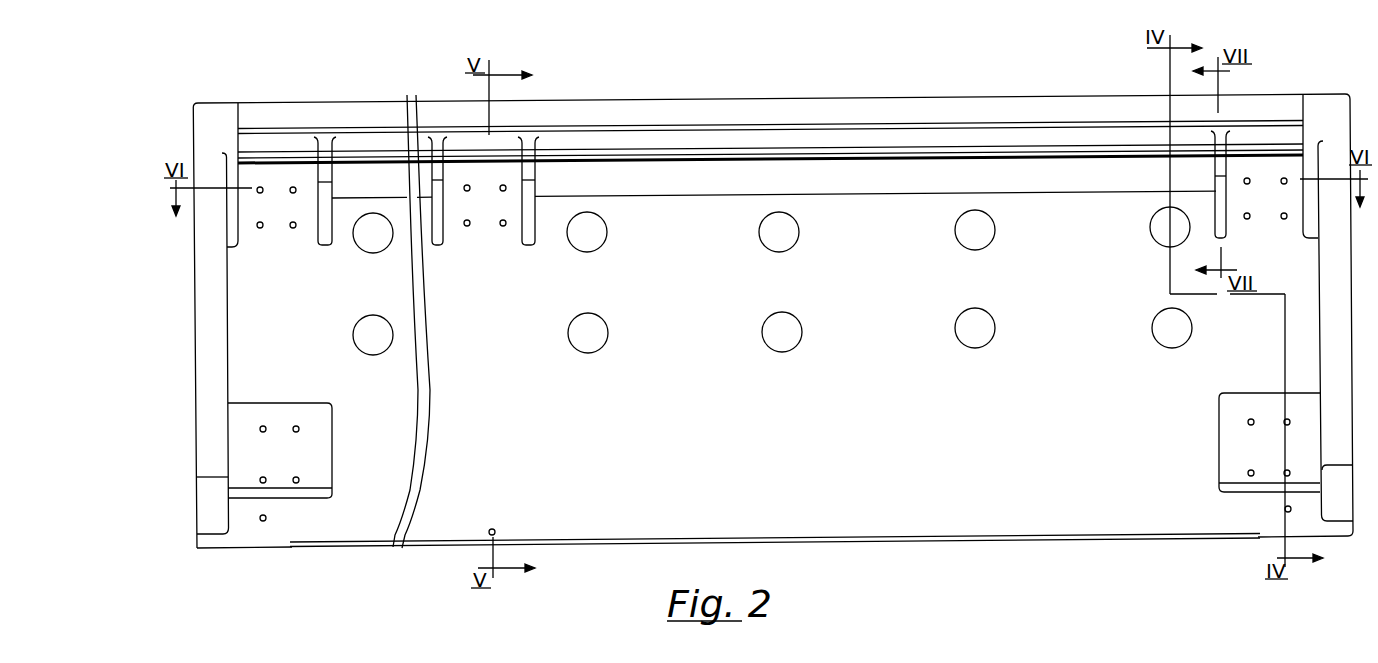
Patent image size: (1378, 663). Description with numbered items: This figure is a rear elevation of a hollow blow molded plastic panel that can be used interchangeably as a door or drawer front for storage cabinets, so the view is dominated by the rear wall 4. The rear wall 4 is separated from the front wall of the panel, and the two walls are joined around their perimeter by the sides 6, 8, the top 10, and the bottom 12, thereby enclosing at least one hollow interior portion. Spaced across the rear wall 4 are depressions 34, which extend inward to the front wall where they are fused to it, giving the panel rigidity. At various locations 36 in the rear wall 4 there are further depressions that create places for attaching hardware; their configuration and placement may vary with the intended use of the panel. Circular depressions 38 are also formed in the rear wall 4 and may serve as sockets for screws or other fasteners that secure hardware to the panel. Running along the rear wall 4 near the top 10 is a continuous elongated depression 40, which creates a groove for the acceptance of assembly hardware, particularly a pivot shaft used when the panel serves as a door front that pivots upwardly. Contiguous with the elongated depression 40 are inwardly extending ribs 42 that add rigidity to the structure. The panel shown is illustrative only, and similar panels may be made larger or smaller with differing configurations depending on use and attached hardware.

The rear wall 4 is at (860, 318).
The side 6 is at (193, 283).
The side 8 is at (1353, 352).
The top 10 is at (772, 97).
The bottom 12 is at (862, 541).
The depressions 34 is at (362, 250).
The locations 36 is at (292, 212).
The circular depressions 38 is at (260, 228).
The elongated depression 40 is at (918, 138).
The ribs 42 is at (335, 188).